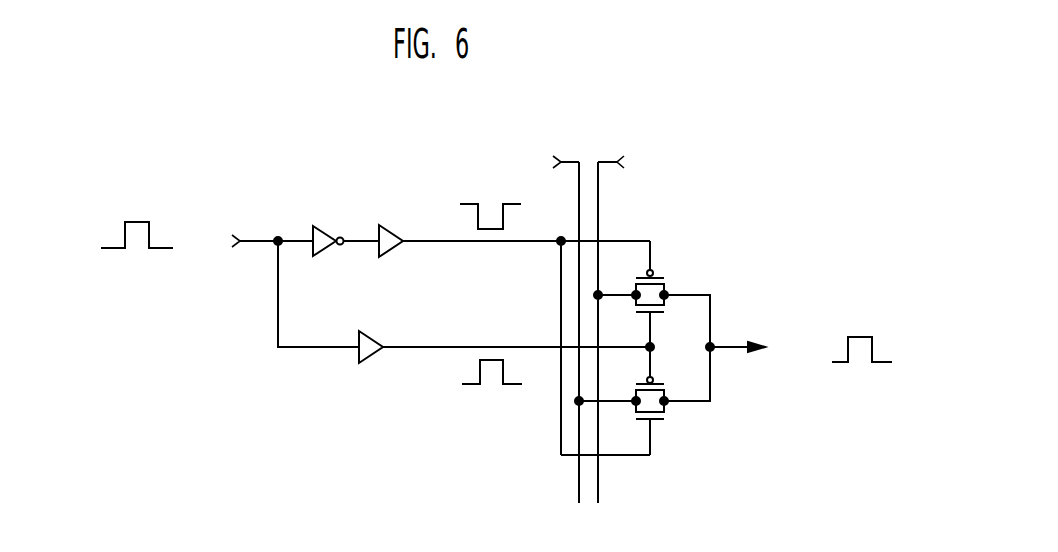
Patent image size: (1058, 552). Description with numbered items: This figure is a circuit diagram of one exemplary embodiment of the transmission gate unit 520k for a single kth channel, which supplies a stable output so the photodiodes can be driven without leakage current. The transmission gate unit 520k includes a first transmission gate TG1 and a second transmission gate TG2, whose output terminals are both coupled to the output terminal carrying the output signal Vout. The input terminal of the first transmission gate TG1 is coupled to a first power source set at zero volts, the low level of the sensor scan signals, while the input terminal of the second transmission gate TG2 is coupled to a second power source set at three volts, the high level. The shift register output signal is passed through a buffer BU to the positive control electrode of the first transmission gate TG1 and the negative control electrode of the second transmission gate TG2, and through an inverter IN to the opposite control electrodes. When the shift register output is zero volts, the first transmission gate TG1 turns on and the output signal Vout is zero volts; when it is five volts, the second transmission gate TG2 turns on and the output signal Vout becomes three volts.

The transmission gate unit 520k is at (483, 292).
The inverter IN is at (328, 255).
The buffer BU is at (381, 306).
The second transmission gate TG2 is at (664, 289).
The first transmission gate TG1 is at (664, 403).
The output signal Vout is at (754, 347).